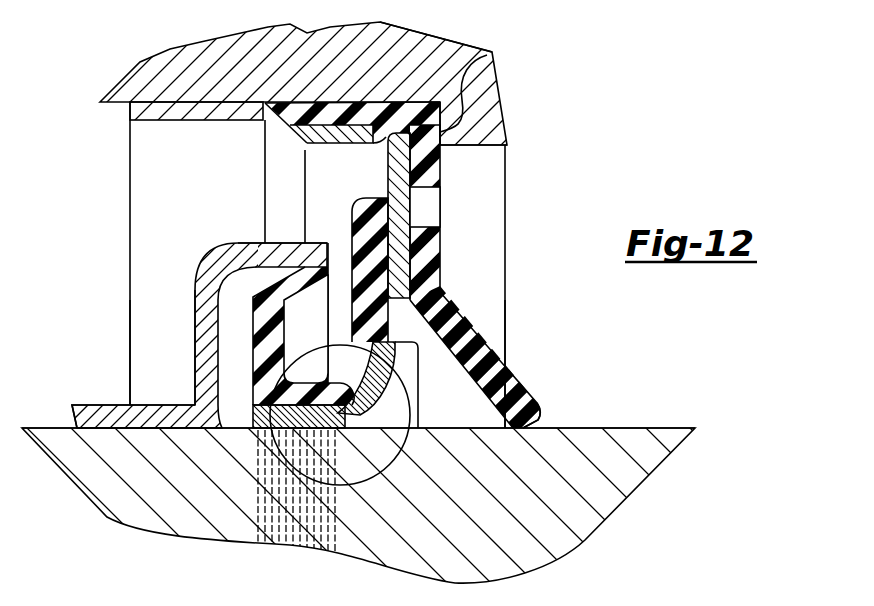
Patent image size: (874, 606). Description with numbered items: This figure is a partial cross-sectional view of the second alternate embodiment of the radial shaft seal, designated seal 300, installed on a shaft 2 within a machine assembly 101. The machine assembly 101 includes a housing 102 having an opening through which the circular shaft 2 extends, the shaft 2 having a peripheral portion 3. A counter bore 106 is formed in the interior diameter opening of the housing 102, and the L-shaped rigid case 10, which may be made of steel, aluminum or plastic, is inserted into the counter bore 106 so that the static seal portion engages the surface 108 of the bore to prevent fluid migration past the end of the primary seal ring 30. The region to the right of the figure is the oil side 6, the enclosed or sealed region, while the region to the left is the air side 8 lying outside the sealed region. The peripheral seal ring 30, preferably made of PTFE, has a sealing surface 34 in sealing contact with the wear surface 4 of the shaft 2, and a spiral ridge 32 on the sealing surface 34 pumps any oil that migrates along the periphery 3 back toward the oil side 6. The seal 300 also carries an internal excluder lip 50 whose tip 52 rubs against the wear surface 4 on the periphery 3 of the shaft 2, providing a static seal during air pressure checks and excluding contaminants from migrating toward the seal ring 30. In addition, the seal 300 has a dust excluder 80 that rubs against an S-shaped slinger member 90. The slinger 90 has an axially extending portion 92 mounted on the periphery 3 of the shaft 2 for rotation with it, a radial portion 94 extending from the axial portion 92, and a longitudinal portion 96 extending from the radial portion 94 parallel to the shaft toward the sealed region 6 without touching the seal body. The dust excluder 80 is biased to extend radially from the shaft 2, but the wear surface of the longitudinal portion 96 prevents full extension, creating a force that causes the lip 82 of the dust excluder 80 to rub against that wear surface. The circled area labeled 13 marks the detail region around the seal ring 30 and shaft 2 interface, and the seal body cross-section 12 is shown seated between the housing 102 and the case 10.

The shaft 2 is at (509, 497).
The periphery 3 is at (354, 458).
The wear surface 4 is at (658, 428).
The oil side 6 is at (561, 295).
The air side 8 is at (90, 287).
The L-shaped rigid case 10 is at (232, 122).
The seal body 12 is at (358, 147).
The detail circle 13 is at (298, 478).
The primary seal ring 30 is at (374, 400).
The spiral ridge 32 is at (283, 432).
The sealing surface 34 is at (253, 432).
The internal excluder lip 50 is at (515, 382).
The tip of excluder lip 52 is at (560, 426).
The dust excluder 80 is at (316, 288).
The lip of dust excluder 82 is at (305, 272).
The S-shaped slinger member 90 is at (204, 265).
The axially extending portion 92 is at (103, 412).
The radial portion 94 is at (195, 352).
The longitudinal portion 96 is at (258, 248).
The machine assembly 101 is at (490, 107).
The housing 102 is at (173, 72).
The counter bore 106 is at (483, 51).
The surface of bore 108 is at (264, 102).
The seal (second alternate embodiment) 300 is at (473, 263).